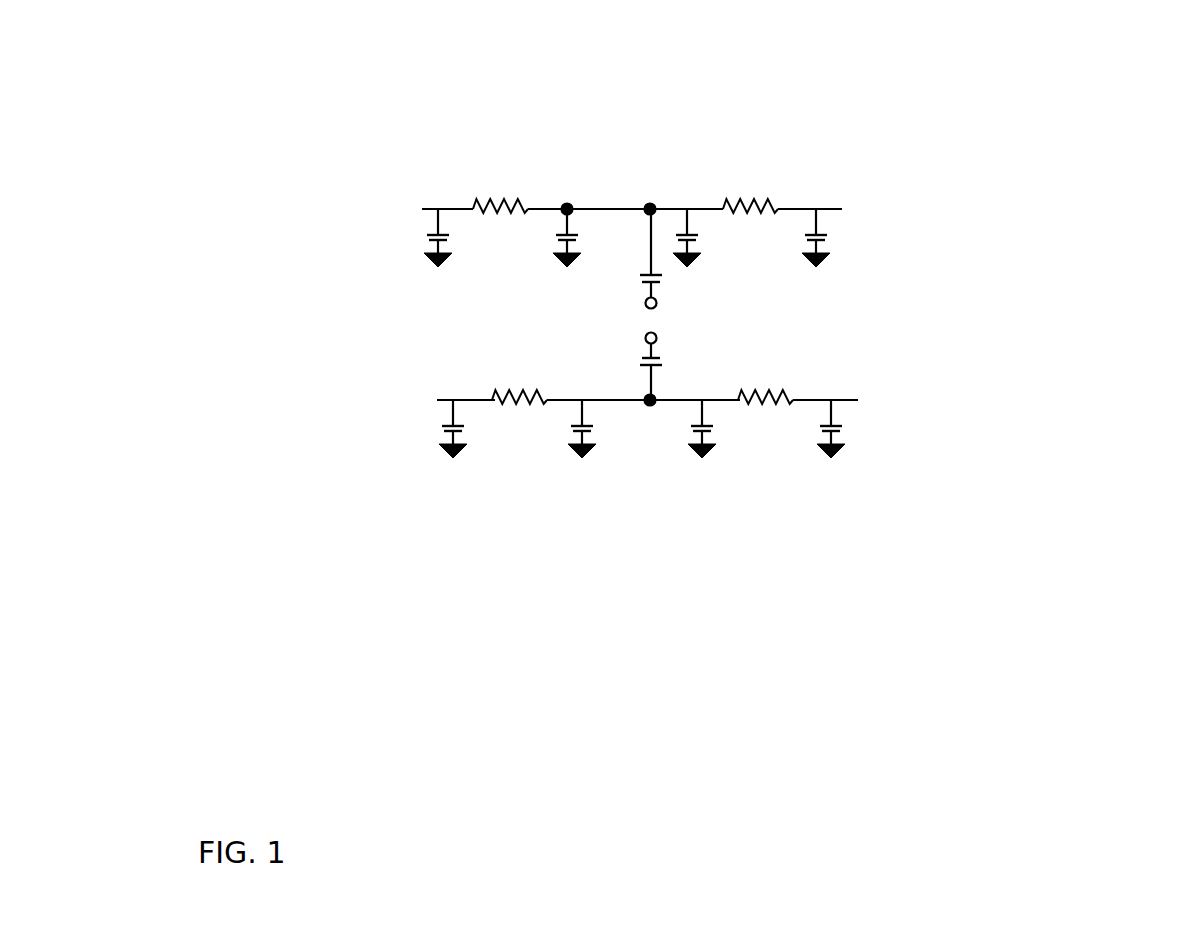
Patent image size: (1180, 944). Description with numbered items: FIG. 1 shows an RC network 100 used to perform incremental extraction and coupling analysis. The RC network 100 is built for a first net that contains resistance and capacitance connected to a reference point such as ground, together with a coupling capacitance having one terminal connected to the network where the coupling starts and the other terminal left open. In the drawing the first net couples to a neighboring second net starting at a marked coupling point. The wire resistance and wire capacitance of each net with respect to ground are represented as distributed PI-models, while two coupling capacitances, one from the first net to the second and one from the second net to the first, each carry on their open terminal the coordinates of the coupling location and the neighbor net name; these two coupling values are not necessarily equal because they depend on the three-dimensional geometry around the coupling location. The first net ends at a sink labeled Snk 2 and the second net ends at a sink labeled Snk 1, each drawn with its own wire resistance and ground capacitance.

The RC network 100 is at (367, 93).
The sink 2 of Net A 2 is at (852, 232).
The sink 1 of Net B 1 is at (868, 424).